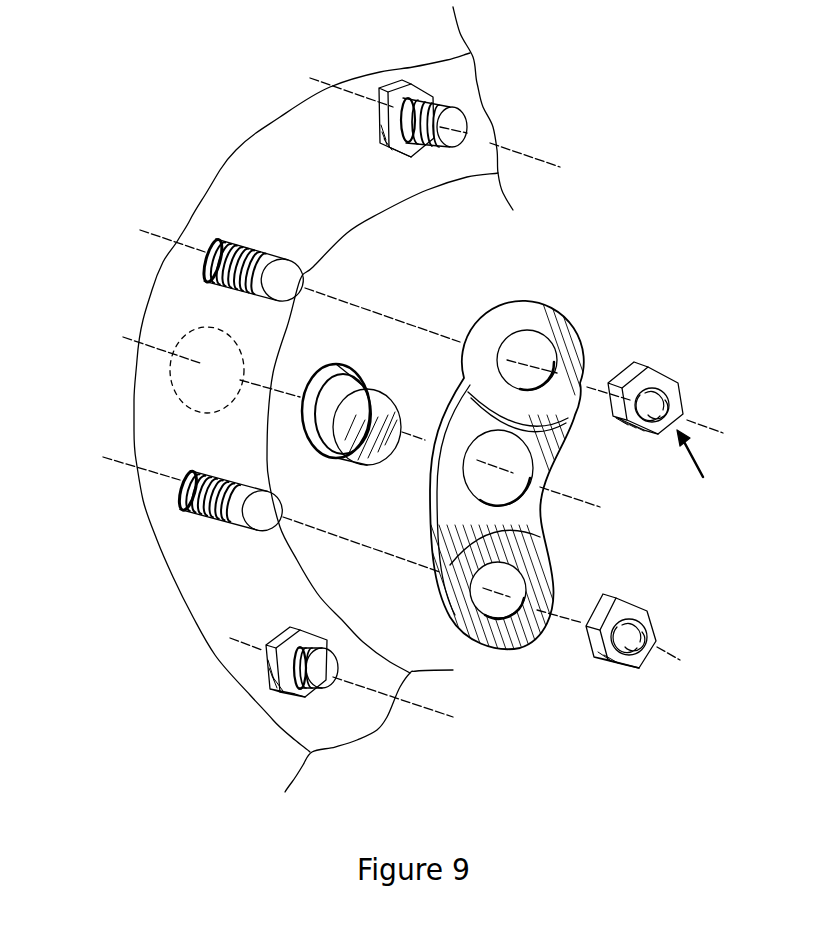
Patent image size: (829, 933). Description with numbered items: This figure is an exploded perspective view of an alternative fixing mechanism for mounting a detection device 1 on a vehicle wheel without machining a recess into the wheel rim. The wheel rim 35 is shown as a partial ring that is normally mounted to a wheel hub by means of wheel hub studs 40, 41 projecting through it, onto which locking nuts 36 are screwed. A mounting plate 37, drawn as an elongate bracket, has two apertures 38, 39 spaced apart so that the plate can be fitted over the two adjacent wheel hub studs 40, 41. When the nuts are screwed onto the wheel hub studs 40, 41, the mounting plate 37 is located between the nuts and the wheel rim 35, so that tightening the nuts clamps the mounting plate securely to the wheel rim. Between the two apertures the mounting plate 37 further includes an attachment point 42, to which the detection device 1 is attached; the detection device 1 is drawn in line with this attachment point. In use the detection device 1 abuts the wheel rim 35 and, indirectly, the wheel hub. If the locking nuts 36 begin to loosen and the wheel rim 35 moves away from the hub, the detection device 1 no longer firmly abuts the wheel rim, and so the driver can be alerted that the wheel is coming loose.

The detection device 1 is at (308, 395).
The wheel rim 35 is at (293, 150).
The locking nut 36 is at (275, 683).
The mounting plate 37 is at (567, 481).
The aperture 38 is at (537, 350).
The aperture 39 is at (500, 603).
The wheel hub stud 40 is at (209, 247).
The wheel hub stud 41 is at (200, 517).
The attachment point 42 is at (497, 490).